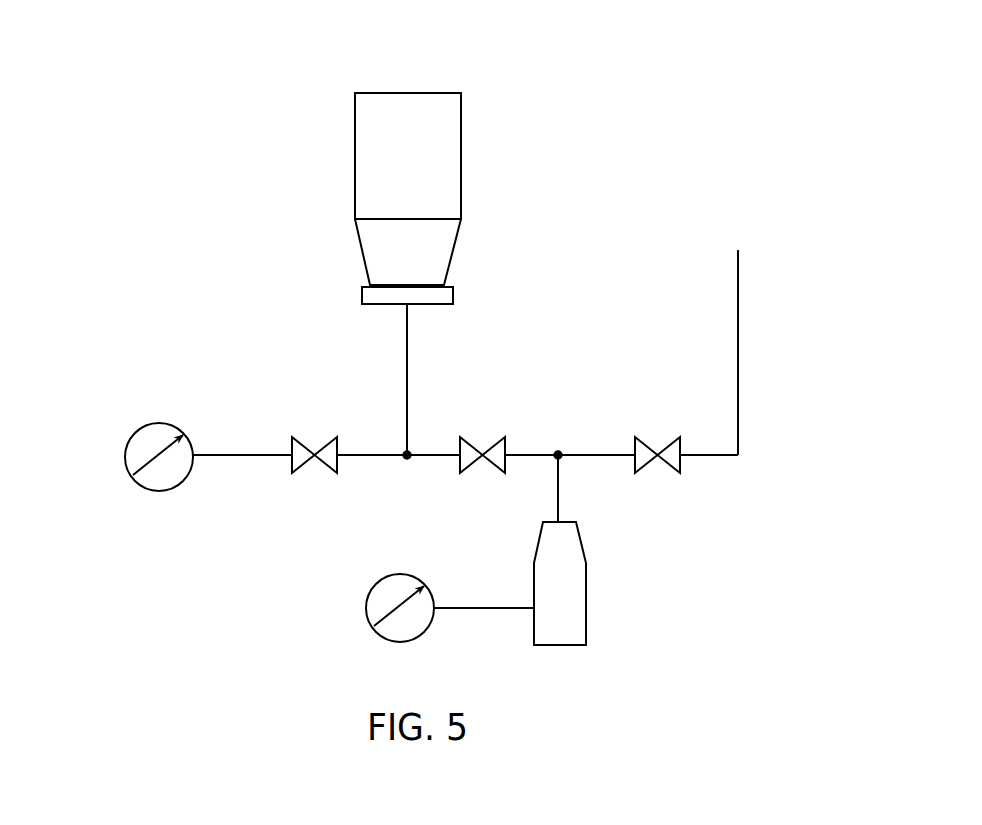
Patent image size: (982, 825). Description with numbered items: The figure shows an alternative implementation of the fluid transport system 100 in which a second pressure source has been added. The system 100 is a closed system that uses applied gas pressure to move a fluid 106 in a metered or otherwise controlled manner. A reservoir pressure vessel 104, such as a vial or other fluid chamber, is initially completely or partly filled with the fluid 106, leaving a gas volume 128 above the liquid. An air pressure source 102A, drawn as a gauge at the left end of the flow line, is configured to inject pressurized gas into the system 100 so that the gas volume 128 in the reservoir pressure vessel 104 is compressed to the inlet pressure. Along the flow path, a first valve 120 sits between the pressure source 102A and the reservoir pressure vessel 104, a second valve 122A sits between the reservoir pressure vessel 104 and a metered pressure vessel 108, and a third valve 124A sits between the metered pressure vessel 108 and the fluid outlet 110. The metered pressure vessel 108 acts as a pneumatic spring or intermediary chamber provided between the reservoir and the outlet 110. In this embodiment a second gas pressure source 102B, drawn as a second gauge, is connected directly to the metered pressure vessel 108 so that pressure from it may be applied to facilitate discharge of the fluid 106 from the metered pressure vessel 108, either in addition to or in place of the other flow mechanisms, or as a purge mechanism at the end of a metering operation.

The fluid transport system 100 is at (290, 58).
The reservoir pressure vessel 104 is at (407, 189).
The fluid 106 is at (357, 180).
The gas volume 128 is at (445, 132).
The fluid outlet 110 is at (760, 313).
The air pressure source 102A is at (125, 455).
The second gas pressure source 102B is at (366, 608).
The first valve 120 is at (316, 473).
The second valve 122A is at (473, 473).
The third valve 124A is at (668, 473).
The metered pressure vessel 108 is at (586, 563).